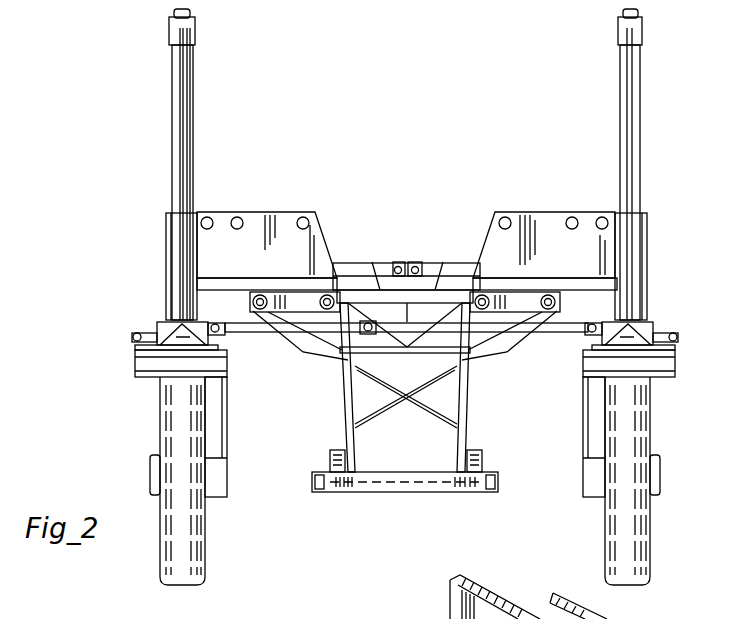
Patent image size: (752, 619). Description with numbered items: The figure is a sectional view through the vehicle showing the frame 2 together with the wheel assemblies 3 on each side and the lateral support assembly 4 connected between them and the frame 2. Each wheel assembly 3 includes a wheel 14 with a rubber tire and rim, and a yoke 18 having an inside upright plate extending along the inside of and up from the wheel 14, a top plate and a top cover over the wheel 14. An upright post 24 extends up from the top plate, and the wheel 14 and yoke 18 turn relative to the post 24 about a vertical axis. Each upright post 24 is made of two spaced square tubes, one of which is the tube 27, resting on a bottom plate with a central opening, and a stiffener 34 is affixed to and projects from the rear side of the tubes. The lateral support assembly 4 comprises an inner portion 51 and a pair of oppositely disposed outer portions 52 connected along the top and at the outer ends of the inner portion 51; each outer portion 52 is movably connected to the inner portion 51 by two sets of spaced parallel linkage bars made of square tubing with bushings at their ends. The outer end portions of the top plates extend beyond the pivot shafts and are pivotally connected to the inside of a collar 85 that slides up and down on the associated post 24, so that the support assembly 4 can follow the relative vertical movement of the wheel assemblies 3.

The frame 2 is at (350, 491).
The wheel assembly 3 is at (132, 364).
The lateral support assembly 4 is at (336, 367).
The wheel 14 is at (166, 562).
The yoke 18 is at (227, 363).
The upright post 24 is at (172, 201).
The tube 27 is at (541, 616).
The stiffener 34 is at (452, 605).
The inner portion 51 is at (472, 418).
The outer portion 52 is at (291, 203).
The collar 85 is at (170, 256).